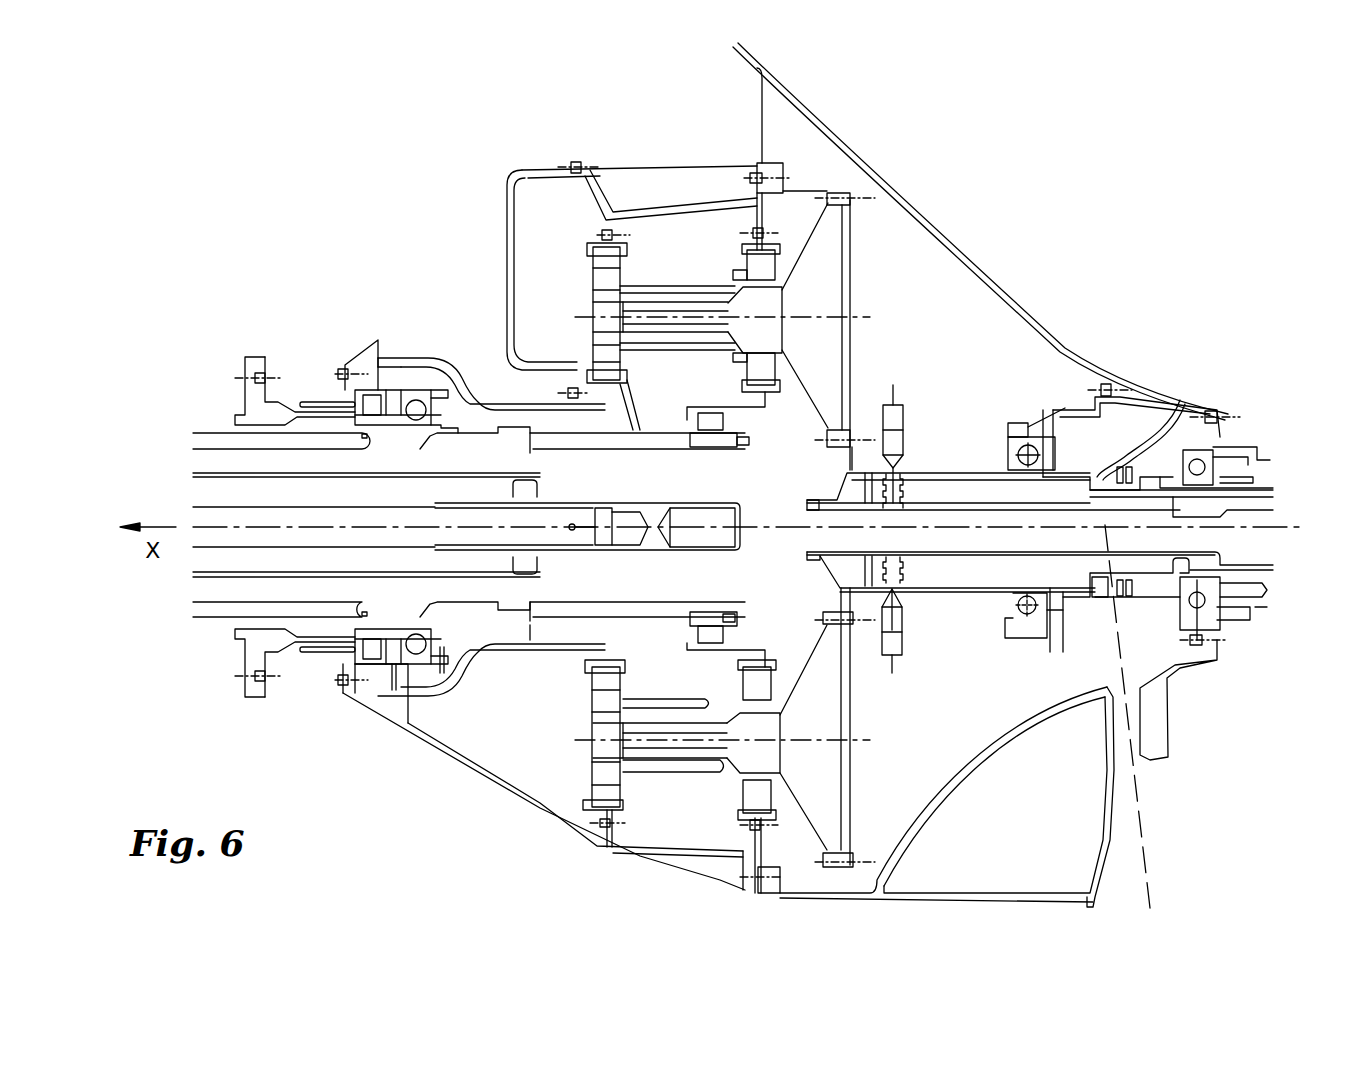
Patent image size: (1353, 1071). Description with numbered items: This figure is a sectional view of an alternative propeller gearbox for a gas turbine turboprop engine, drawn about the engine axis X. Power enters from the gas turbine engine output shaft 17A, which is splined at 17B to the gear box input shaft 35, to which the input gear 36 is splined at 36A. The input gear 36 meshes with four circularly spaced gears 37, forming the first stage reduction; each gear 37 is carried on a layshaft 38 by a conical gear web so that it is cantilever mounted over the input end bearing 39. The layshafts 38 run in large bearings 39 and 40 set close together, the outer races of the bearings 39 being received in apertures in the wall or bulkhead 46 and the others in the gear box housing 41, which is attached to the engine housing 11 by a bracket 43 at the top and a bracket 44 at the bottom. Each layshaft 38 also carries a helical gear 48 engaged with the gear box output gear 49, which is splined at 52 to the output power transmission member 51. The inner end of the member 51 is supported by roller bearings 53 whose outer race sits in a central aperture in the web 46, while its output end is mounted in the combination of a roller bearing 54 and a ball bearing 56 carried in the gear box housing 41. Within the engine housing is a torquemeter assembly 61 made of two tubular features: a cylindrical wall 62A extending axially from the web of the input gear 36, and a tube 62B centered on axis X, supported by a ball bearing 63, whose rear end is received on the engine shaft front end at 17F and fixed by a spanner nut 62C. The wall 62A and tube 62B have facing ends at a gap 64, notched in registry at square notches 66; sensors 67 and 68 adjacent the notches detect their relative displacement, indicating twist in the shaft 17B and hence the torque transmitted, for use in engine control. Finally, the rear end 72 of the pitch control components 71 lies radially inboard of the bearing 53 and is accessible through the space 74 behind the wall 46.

The engine housing 11 is at (978, 287).
The gas turbine engine output shaft 17A is at (1272, 492).
The spline 17B is at (1240, 510).
The front end of engine shaft 17F is at (1178, 400).
The gear box input shaft 35 is at (995, 505).
The input gear 36 is at (869, 470).
The spline 36A is at (840, 488).
The gear 37 is at (840, 193).
The layshaft 38 is at (690, 300).
The bearing 39 is at (765, 270).
The bearing 40 is at (595, 264).
The gear box housing 41 is at (508, 135).
The bracket 43 is at (792, 125).
The bracket 44 is at (812, 885).
The wall or bulkhead 46 is at (755, 232).
The helical gear 48 is at (650, 288).
The gear box output gear 49 is at (655, 355).
The output power transmission member 51 is at (285, 418).
The spline 52 is at (533, 452).
The roller bearing 53 is at (728, 428).
The roller bearing 54 is at (372, 395).
The ball bearing 56 is at (410, 400).
The torquemeter assembly 61 is at (982, 338).
The cylindrical wall 62A is at (890, 395).
The tube 62B is at (987, 430).
The spanner nut 62C is at (1095, 470).
The ball bearing 63 is at (1032, 430).
The gap 64 is at (900, 475).
The notches 66 is at (905, 490).
The sensor 67 is at (900, 410).
The sensor 68 is at (903, 645).
The pitch control components 71 is at (560, 568).
The rear end of pitch control components 72 is at (740, 548).
The space 74 is at (800, 622).